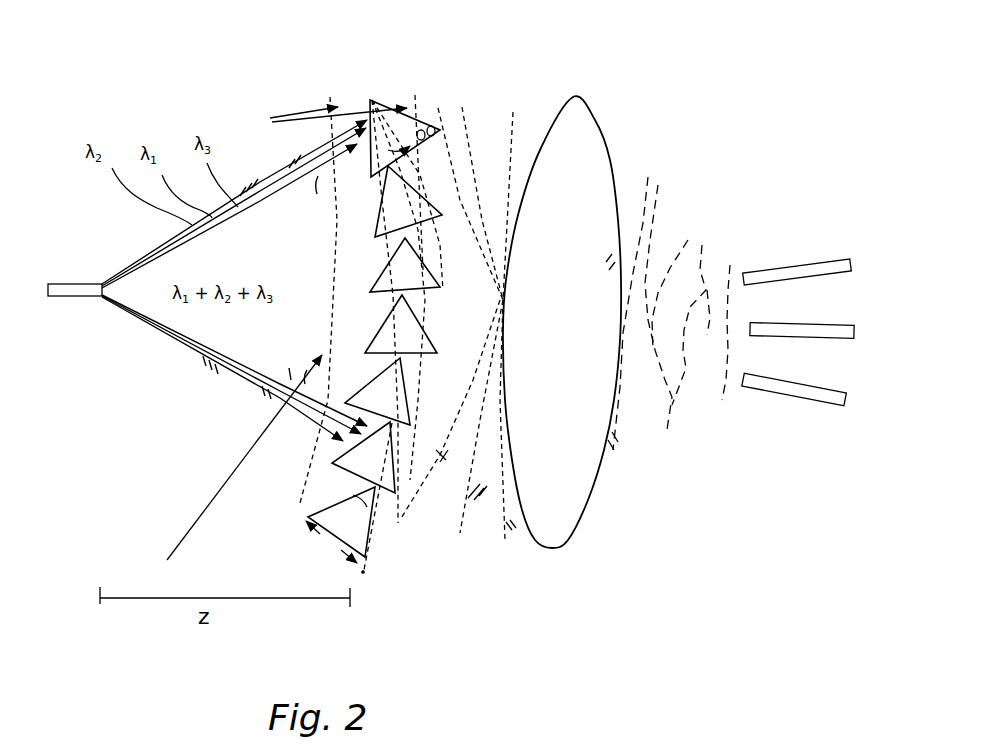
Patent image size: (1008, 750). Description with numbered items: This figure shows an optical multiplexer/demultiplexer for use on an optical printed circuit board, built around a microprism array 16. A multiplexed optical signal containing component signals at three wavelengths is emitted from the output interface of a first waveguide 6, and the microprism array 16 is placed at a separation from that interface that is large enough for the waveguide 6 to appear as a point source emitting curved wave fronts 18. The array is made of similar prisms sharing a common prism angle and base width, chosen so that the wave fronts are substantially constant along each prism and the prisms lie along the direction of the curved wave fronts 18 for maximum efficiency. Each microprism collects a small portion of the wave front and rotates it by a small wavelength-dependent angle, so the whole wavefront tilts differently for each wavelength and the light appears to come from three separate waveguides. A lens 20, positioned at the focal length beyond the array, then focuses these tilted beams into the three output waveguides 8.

The first waveguide 6 is at (67, 284).
The microprism array 16 is at (375, 69).
The curved wave fronts 18 is at (335, 292).
The lens 20 is at (562, 368).
The output waveguides 8 is at (838, 258).